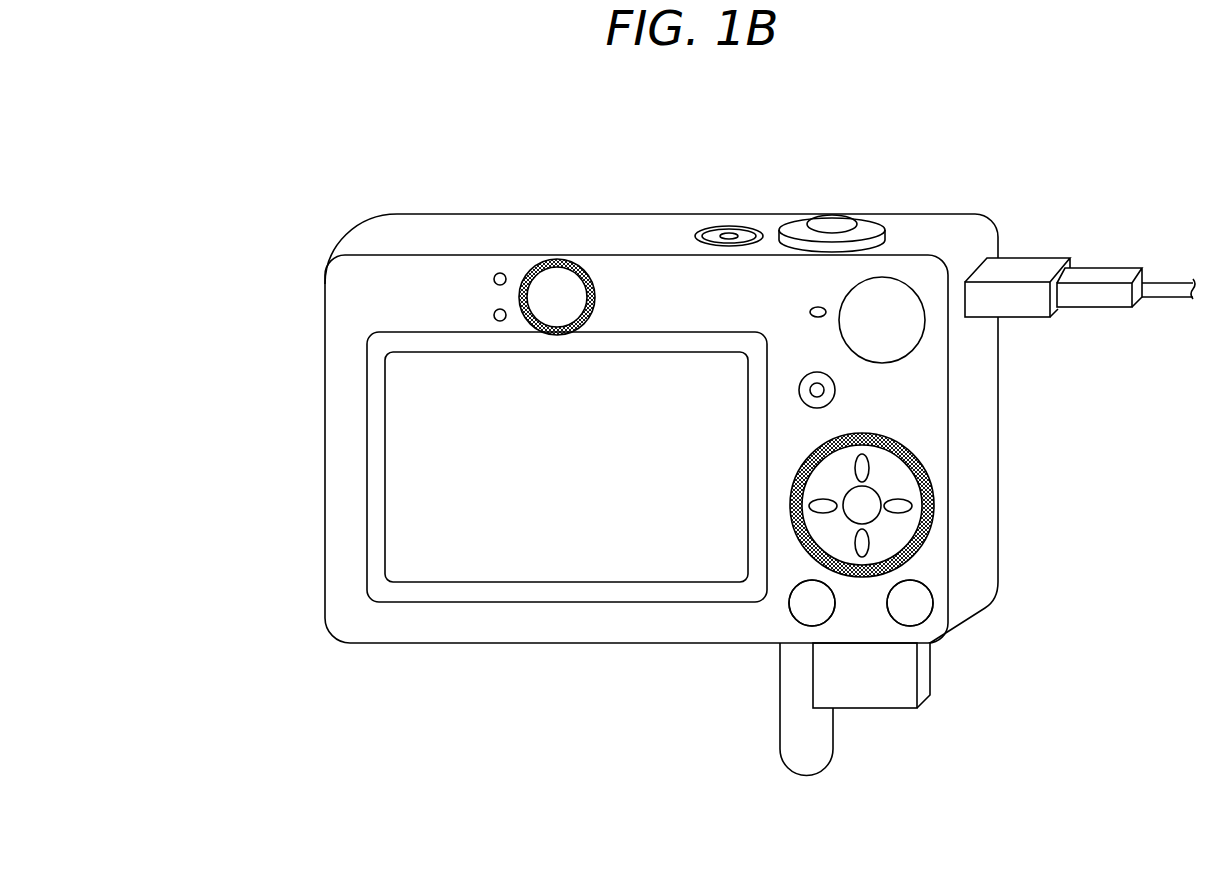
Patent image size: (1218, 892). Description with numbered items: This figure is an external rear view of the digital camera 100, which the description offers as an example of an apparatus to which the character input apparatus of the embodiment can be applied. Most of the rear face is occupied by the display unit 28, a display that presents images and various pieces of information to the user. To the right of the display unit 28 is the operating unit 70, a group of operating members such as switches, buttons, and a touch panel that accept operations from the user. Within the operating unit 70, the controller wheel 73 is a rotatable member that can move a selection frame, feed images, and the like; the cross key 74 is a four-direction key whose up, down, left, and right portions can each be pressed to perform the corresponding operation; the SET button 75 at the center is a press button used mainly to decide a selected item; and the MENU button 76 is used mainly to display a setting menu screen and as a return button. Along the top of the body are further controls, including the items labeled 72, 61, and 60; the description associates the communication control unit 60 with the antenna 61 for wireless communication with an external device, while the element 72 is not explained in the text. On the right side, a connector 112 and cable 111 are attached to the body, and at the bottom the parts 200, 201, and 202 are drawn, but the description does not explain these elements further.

The display unit 28 is at (458, 370).
The communication control unit 60 is at (900, 278).
The antenna 61 is at (842, 218).
The operating unit 70 is at (813, 253).
The power switch 72 is at (730, 226).
The controller wheel 73 is at (812, 452).
The cross key 74 is at (869, 466).
The SET button 75 is at (858, 508).
The MENU button 76 is at (918, 603).
The digital camera 100 is at (472, 675).
The connection cable 111 is at (1105, 268).
The connector 112 is at (1030, 257).
The recording medium 200 is at (898, 682).
The recording medium slot 201 is at (828, 647).
The lid 202 is at (838, 750).